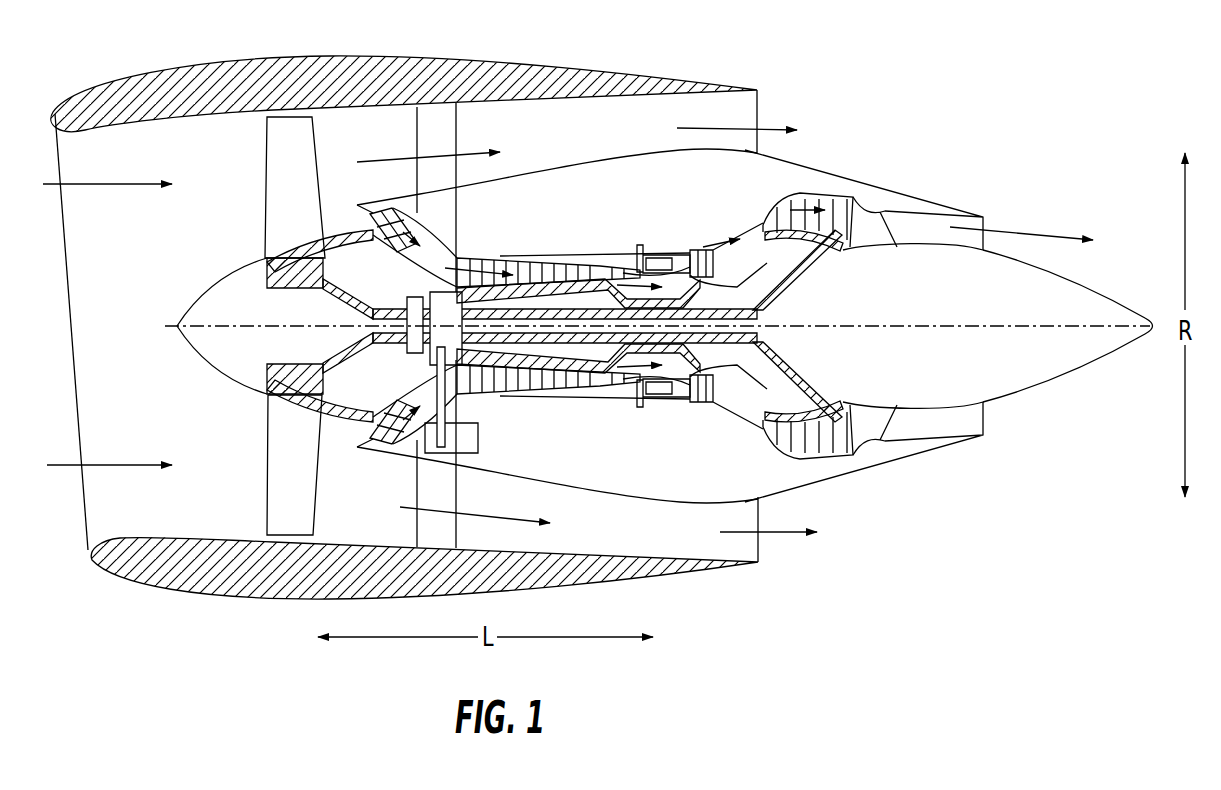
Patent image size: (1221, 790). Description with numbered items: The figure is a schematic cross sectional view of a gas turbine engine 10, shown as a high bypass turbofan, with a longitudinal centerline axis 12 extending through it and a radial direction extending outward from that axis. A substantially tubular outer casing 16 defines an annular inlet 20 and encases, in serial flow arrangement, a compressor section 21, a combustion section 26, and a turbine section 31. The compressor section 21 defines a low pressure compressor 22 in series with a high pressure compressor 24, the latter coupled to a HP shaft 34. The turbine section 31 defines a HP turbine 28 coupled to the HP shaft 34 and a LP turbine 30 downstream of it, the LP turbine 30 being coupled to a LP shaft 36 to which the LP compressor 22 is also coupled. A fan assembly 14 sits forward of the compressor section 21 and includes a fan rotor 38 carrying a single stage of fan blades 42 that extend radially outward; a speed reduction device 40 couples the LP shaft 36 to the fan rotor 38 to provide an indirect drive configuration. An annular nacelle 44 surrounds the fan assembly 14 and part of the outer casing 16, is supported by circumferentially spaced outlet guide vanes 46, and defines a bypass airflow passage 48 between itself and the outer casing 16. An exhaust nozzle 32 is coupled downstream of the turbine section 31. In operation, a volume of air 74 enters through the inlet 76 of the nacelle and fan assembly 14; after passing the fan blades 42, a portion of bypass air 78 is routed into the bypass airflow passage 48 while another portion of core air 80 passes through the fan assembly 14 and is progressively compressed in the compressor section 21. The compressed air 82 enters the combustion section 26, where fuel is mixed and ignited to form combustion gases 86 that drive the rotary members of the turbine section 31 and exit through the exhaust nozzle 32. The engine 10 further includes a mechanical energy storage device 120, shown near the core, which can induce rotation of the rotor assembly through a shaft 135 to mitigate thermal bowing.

The gas turbine engine 10 is at (895, 76).
The axial centerline axis 12 is at (922, 323).
The fan assembly 14 is at (343, 128).
The outer casing 16 is at (650, 145).
The annular inlet 20 is at (357, 433).
The compressor section 21 is at (517, 230).
The low pressure compressor 22 is at (440, 410).
The high pressure compressor 24 is at (487, 382).
The combustion section 26 is at (655, 405).
The high pressure turbine 28 is at (710, 385).
The low pressure turbine 30 is at (845, 463).
The turbine section 31 is at (802, 182).
The exhaust nozzle 32 is at (906, 440).
The high pressure shaft 34 is at (710, 292).
The low pressure shaft 36 is at (796, 282).
The fan rotor 38 is at (323, 290).
The speed reduction device 40 is at (408, 290).
The fan blades 42 is at (283, 153).
The nacelle 44 is at (272, 55).
The outlet guide vanes 46 is at (443, 135).
The bypass airflow passage 48 is at (583, 154).
The air 74 is at (86, 184).
The inlet 76 is at (155, 487).
The bypass air 78 is at (407, 155).
The core air 80 is at (353, 217).
The compressed air 82 is at (445, 262).
The combustion gases 86 is at (815, 207).
The mechanical energy storage device 120 is at (468, 440).
The shaft 135 is at (437, 383).